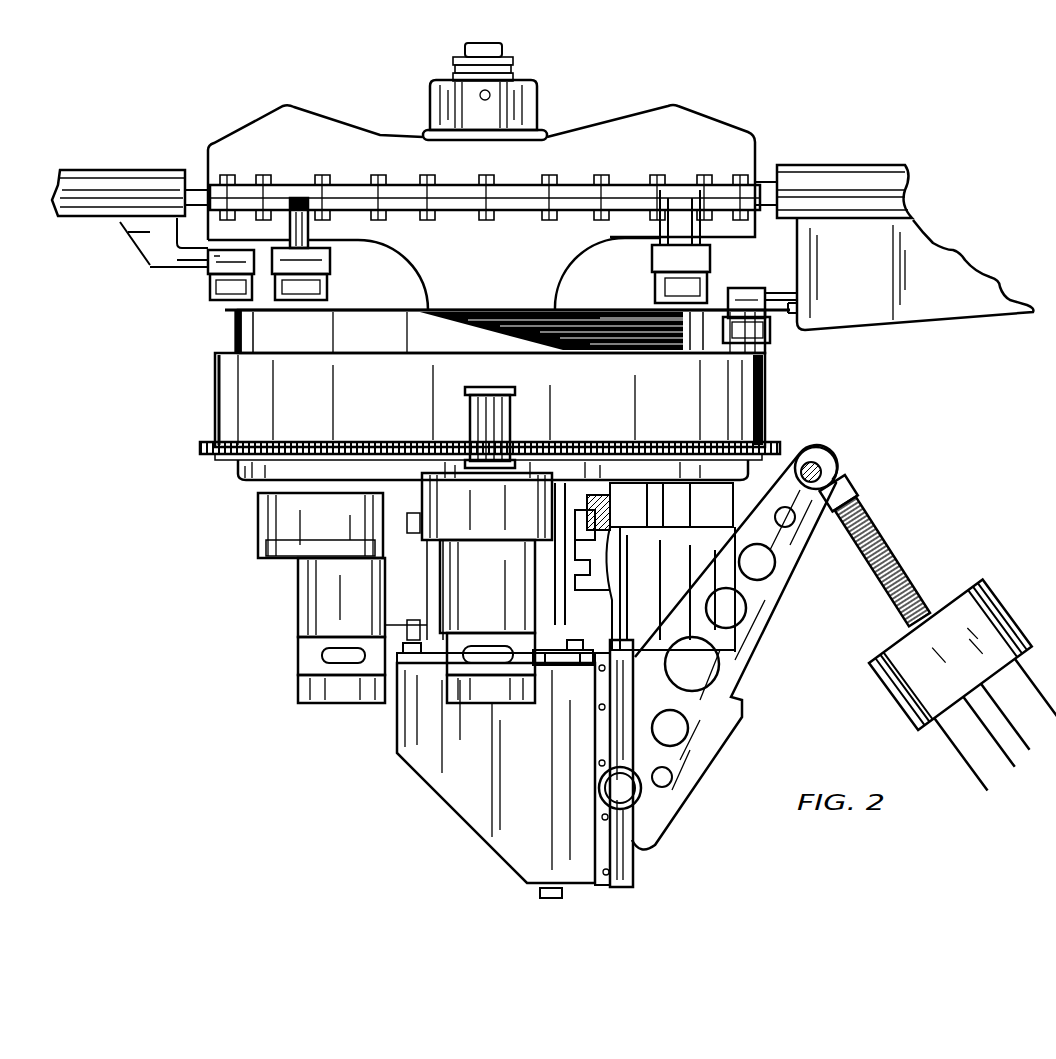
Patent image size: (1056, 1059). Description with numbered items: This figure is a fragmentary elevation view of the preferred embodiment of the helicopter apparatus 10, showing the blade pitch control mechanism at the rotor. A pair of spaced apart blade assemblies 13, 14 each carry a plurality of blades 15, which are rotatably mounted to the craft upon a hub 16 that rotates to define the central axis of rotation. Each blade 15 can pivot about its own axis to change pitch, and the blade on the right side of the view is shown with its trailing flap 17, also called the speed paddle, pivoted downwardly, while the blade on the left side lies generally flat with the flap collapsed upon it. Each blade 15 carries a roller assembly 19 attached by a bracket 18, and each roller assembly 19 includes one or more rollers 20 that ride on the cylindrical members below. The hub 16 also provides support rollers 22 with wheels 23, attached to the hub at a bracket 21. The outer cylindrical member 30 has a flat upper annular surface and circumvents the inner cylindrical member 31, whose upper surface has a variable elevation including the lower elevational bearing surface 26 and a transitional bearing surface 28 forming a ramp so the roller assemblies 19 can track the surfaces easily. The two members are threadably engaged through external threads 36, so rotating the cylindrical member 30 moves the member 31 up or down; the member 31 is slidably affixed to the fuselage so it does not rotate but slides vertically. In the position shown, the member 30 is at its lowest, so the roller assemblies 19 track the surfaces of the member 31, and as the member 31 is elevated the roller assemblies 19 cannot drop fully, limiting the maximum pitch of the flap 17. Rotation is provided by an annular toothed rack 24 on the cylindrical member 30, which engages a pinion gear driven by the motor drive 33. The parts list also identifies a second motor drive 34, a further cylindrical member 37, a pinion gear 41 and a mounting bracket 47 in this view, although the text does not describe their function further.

The helicopter apparatus 10 is at (952, 199).
The blade assembly 13 is at (921, 470).
The blade assembly 14 is at (925, 466).
The blade 15 is at (127, 167).
The hub 16 is at (513, 50).
The flap 17 is at (852, 313).
The bracket 18 is at (152, 252).
The roller assembly 19 is at (205, 283).
The rollers 20 is at (222, 300).
The bracket 21 is at (310, 232).
The support rollers 22 is at (326, 292).
The wheels 23 is at (248, 308).
The annular toothed rack 24 is at (371, 447).
The lower elevational bearing surface 26 is at (405, 270).
The transitional bearing surface 28 is at (503, 310).
The cylindrical member 30 is at (235, 408).
The cylindrical member 31 is at (455, 310).
The motor drive 33 is at (470, 612).
The motor drive 34 is at (343, 588).
The external threads 36 is at (553, 303).
The cylindrical member 37 is at (613, 305).
The pinion gear 41 is at (258, 493).
The mounting bracket 47 is at (257, 540).